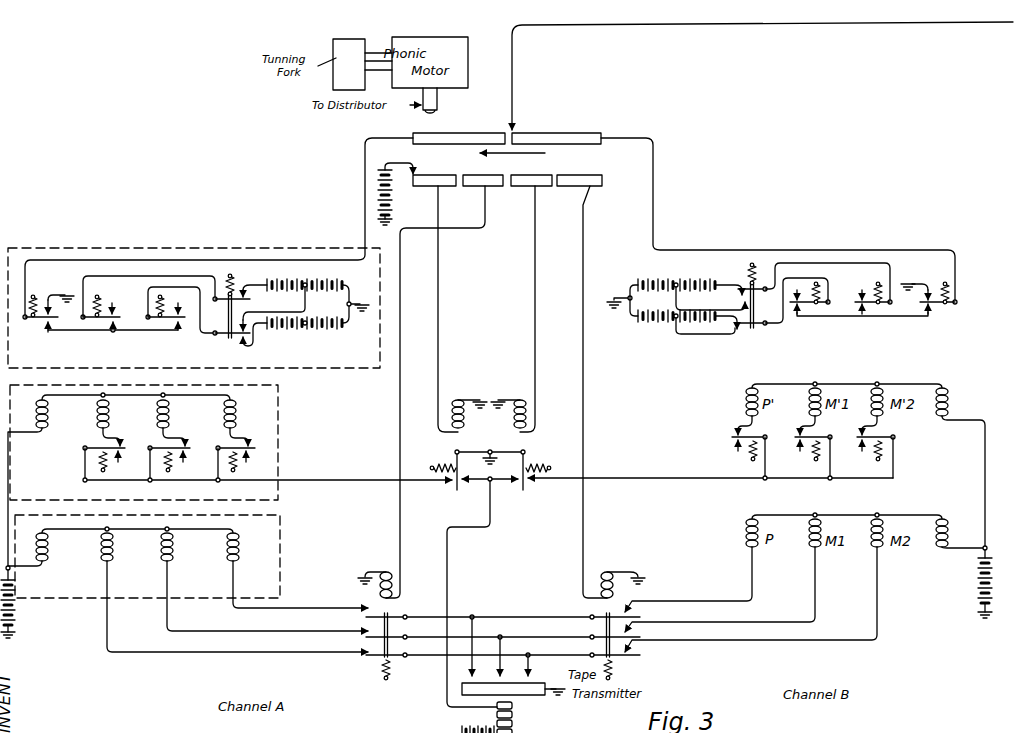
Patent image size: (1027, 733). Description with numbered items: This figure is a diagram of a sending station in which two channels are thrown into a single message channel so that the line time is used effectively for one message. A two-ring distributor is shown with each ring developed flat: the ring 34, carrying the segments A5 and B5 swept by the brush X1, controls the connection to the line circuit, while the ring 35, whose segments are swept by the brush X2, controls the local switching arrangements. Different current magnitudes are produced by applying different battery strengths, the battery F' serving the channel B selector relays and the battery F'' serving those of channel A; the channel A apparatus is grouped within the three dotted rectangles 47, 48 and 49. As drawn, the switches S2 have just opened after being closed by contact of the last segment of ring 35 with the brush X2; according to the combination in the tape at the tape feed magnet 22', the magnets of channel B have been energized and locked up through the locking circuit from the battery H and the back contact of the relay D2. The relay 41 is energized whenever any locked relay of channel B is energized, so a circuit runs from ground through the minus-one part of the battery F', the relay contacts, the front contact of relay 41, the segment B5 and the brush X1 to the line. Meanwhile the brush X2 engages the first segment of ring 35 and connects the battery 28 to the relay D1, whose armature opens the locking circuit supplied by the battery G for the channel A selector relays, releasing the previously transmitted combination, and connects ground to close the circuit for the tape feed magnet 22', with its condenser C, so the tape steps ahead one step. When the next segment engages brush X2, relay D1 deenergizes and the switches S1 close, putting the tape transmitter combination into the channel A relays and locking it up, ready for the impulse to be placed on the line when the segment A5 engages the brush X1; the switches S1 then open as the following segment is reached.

The dotted rectangle 47 is at (194, 308).
The dotted rectangle 48 is at (143, 476).
The dotted rectangle 49 is at (188, 583).
The battery 28 is at (395, 194).
The distributor ring 34 is at (507, 130).
The distributor ring 35 is at (520, 178).
The relay 41 is at (960, 468).
The tape feed magnet 22' is at (476, 723).
The brush X1 is at (762, 76).
The brush X2 is at (424, 166).
The distributor segment A5 is at (459, 130).
The distributor segment B5 is at (556, 131).
The relay D1 is at (468, 403).
The relay D2 is at (508, 403).
The switches S1 is at (475, 613).
The switches S2 is at (617, 613).
The battery G is at (16, 602).
The battery H is at (995, 582).
The condenser C is at (514, 717).
The battery F' is at (676, 303).
The battery F'' is at (306, 312).